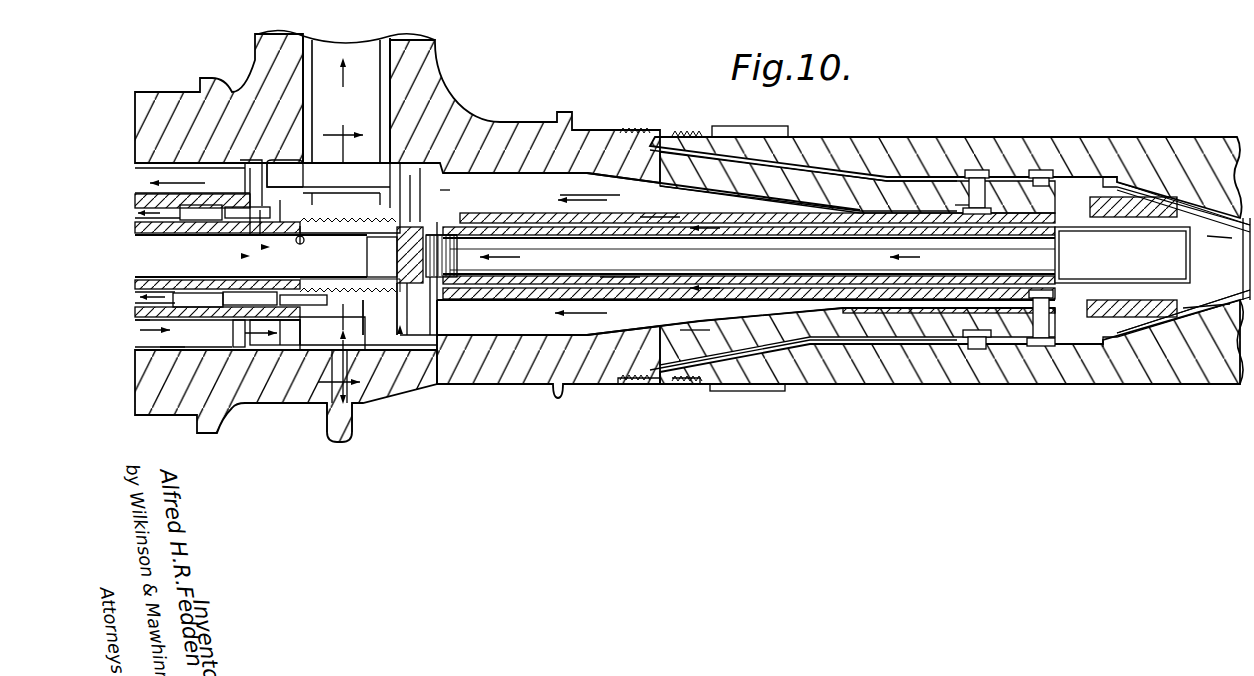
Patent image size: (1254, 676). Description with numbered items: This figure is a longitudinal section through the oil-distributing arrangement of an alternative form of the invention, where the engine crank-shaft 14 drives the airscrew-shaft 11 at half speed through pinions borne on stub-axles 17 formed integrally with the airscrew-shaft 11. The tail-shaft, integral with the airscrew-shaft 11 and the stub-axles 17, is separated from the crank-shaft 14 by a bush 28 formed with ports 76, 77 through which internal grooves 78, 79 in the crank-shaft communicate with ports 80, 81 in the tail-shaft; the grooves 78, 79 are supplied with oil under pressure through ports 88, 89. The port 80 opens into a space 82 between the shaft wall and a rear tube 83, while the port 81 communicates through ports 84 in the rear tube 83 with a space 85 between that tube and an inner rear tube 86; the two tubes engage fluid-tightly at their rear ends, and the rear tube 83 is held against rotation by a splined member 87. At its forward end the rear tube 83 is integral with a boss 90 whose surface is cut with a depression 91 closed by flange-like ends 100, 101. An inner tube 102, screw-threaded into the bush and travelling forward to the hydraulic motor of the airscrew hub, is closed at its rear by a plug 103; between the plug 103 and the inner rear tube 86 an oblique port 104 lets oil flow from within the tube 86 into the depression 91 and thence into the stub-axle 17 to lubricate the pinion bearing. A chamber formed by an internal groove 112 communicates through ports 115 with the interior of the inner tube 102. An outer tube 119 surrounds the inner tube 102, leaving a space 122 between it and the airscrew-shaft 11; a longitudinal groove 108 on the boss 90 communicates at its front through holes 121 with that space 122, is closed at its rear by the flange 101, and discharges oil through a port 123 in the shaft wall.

The airscrew-shaft 11 is at (797, 432).
The crank-shaft 14 is at (866, 147).
The stub-axle 17 is at (433, 61).
The bush 28 is at (1027, 172).
The port 76 is at (973, 357).
The port 77 is at (1052, 172).
The internal groove 78 is at (967, 170).
The internal groove 79 is at (1035, 335).
The port 80 is at (960, 207).
The port 81 is at (1042, 318).
The space 82 is at (587, 193).
The rear tube 83 is at (657, 222).
The ports 84 is at (1060, 278).
The space 85 is at (617, 280).
The inner rear tube 86 is at (693, 330).
The splined member 87 is at (1120, 313).
The port 88 is at (983, 132).
The port 89 is at (1030, 365).
The boss 90 is at (357, 335).
The depression 91 is at (443, 193).
The flange-like end 100 is at (250, 165).
The flange-like end 101 is at (460, 337).
The inner tube 102 is at (251, 256).
The plug 103 is at (407, 353).
The oblique port 104 is at (492, 172).
The longitudinal groove 108 is at (298, 345).
The internal groove 112 is at (283, 207).
The ports 115 is at (304, 242).
The outer tube 119 is at (142, 380).
The holes 121 is at (293, 345).
The space 122 is at (172, 380).
The port 123 is at (400, 330).